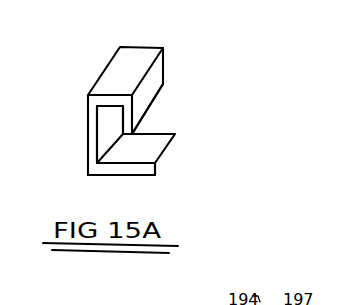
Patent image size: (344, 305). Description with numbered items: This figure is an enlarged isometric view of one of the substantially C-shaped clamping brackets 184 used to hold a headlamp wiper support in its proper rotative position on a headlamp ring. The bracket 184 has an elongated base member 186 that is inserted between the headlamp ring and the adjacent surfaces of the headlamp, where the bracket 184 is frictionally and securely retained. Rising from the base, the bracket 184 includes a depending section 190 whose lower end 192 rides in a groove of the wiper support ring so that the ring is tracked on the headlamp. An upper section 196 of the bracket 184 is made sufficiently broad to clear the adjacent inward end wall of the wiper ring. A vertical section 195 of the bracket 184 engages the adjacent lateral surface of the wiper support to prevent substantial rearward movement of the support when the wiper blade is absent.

The bracket 184 is at (95, 127).
The base member 186 is at (147, 150).
The depending section 190 is at (150, 83).
The lower end 192 is at (155, 103).
The vertical section 195 is at (110, 132).
The upper section 196 is at (120, 68).